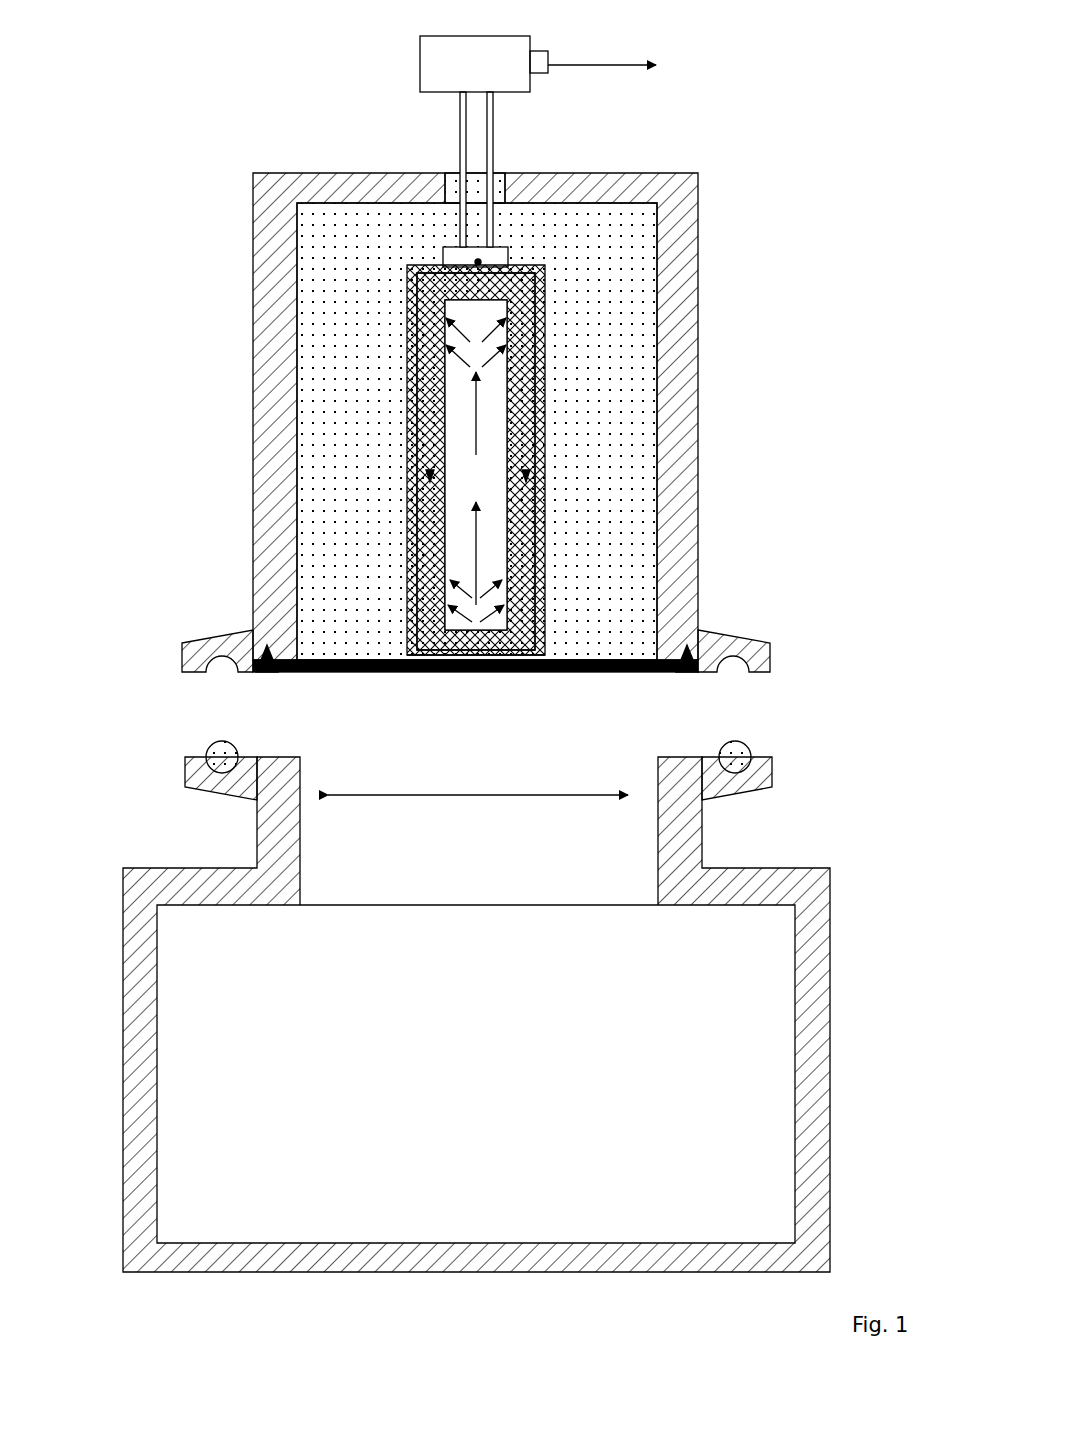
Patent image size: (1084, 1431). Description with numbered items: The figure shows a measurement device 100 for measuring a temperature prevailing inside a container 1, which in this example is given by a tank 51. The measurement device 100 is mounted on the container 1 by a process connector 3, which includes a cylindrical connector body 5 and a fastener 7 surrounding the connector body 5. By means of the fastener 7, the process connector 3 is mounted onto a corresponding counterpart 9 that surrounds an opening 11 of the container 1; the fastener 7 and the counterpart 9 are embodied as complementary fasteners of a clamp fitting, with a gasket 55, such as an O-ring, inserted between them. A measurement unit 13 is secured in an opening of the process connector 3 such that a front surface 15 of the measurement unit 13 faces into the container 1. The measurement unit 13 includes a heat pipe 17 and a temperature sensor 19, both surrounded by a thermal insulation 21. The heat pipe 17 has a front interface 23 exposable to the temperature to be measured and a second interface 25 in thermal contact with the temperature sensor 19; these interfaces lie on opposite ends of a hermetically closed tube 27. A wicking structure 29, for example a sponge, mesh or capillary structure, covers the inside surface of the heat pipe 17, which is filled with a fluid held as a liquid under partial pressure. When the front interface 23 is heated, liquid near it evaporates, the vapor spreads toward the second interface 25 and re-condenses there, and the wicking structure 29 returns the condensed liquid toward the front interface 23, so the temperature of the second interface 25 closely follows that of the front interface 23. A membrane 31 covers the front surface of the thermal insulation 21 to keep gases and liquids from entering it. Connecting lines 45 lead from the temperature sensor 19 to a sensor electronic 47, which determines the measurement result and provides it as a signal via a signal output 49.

The measurement device 100 is at (200, 212).
The container 1 is at (439, 991).
The tank 51 is at (135, 1020).
The process connector 3 is at (775, 495).
The connector body 5 is at (690, 577).
The fastener 7 is at (718, 634).
The counterpart 9 is at (238, 785).
The opening 11 is at (450, 800).
The measurement unit 13 is at (805, 155).
The front surface 15 is at (565, 672).
The heat pipe 17 is at (752, 267).
The temperature sensor 19 is at (495, 258).
The thermal insulation 21 is at (477, 431).
The front interface 23 is at (495, 655).
The second interface 25 is at (478, 268).
The tube 27 is at (540, 358).
The wicking structure 29 is at (528, 385).
The membrane 31 is at (373, 668).
The connecting line 45 is at (460, 148).
The sensor electronic 47 is at (475, 64).
The signal output 49 is at (540, 60).
The gasket 55 is at (212, 752).